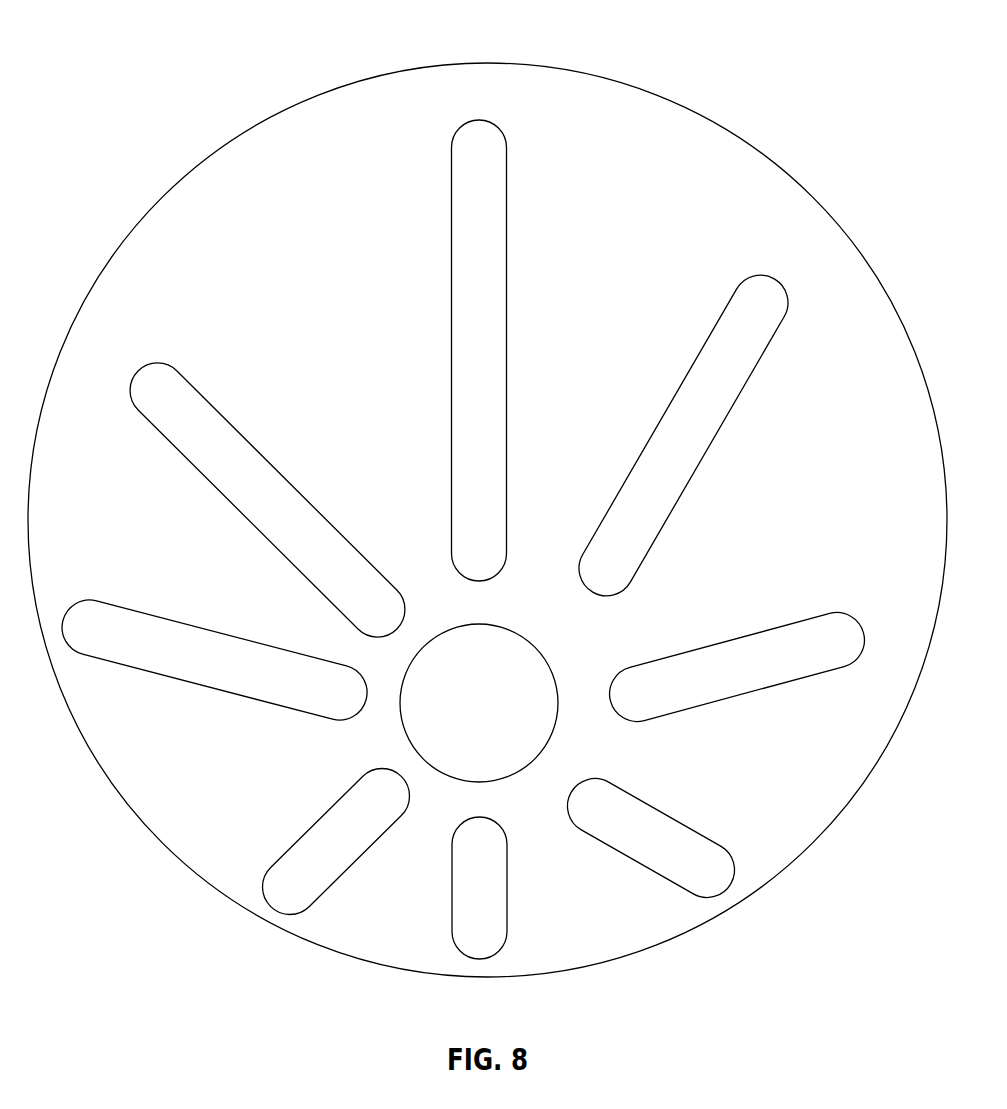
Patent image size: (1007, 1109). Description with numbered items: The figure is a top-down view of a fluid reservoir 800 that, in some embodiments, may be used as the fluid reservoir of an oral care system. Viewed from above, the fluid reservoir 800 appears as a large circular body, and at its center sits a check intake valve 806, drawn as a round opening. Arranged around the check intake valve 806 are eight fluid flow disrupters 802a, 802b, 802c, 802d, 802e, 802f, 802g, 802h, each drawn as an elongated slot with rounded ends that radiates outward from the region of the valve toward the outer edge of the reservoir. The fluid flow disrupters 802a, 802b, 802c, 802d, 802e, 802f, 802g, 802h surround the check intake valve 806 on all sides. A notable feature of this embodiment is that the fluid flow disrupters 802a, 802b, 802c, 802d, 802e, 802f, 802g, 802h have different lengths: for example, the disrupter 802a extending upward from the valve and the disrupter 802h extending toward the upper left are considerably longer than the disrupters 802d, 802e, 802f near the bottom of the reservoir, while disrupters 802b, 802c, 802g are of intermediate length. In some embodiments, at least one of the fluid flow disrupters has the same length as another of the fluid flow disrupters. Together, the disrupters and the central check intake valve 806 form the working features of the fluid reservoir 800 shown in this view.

The fluid reservoir 800 is at (120, 46).
The check intake valve 806 is at (477, 623).
The fluid flow disrupter 802a is at (507, 215).
The fluid flow disrupter 802b is at (662, 418).
The fluid flow disrupter 802c is at (864, 635).
The fluid flow disrupter 802d is at (668, 808).
The fluid flow disrupter 802e is at (507, 888).
The fluid flow disrupter 802f is at (305, 832).
The fluid flow disrupter 802g is at (160, 613).
The fluid flow disrupter 802h is at (237, 430).